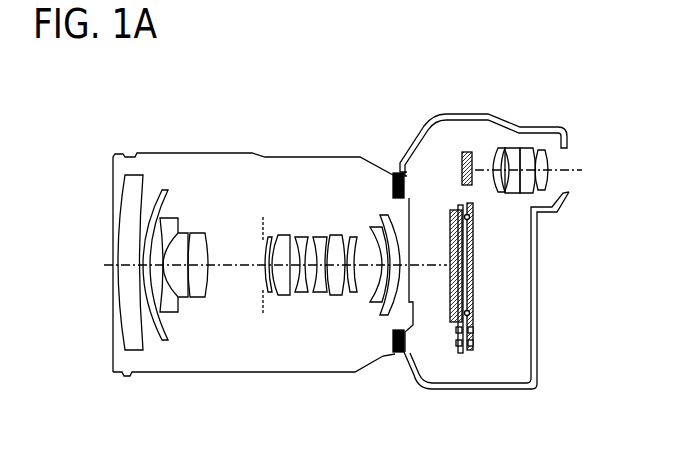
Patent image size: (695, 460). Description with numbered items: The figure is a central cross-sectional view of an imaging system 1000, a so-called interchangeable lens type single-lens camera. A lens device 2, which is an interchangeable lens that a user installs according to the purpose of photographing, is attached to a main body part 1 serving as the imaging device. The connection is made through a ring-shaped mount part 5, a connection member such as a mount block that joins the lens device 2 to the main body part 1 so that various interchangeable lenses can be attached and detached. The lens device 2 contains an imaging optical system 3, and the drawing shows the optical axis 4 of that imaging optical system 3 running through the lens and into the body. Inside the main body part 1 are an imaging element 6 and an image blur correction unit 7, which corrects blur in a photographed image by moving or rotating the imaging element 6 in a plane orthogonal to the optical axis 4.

The imaging system 1000 is at (662, 55).
The main body part 1 is at (510, 110).
The lens device 2 is at (215, 145).
The imaging optical system 3 is at (188, 340).
The optical axis 4 is at (90, 273).
The mount part 5 is at (398, 355).
The imaging element 6 is at (448, 335).
The image blur correction unit 7 is at (495, 343).